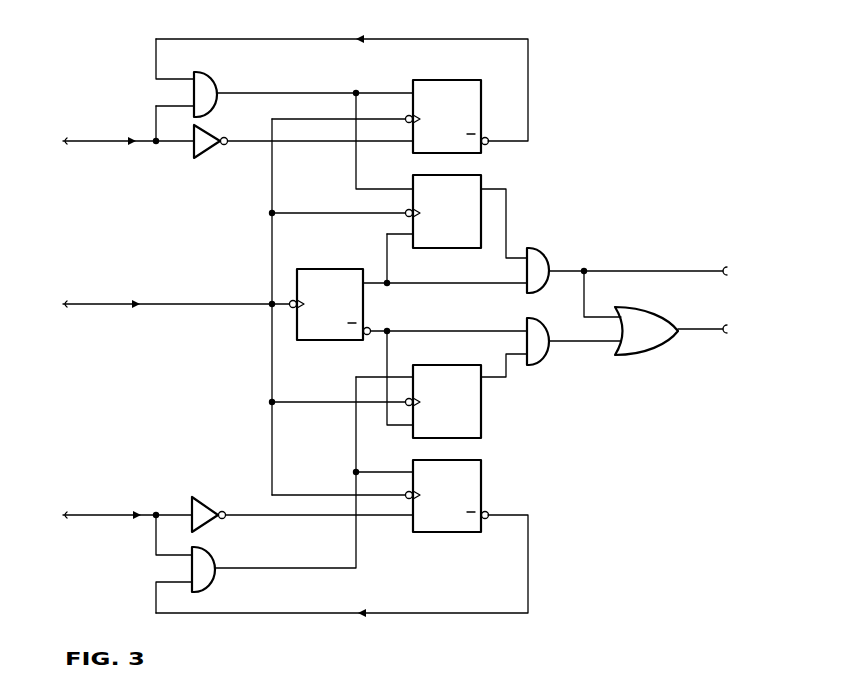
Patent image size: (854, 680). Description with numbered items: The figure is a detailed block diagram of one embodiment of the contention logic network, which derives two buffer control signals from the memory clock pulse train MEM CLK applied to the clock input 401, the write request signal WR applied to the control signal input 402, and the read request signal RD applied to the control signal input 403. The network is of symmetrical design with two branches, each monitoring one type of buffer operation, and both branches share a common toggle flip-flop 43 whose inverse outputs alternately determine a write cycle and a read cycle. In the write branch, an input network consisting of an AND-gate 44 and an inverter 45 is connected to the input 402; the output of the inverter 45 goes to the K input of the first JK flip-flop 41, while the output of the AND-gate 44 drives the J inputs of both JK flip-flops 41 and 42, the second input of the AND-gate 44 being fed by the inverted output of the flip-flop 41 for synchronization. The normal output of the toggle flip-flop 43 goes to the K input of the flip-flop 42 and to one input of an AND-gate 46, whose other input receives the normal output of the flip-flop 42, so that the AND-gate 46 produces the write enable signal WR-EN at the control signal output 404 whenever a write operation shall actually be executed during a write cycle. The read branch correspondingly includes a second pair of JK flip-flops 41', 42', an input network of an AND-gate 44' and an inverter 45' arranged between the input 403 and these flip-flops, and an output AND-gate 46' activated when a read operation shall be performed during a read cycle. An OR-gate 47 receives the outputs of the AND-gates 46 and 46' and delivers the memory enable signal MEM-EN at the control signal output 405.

The first JK flip-flop 41 is at (342, 94).
The second JK flip-flop 42 is at (441, 188).
The toggle flip-flop 43 is at (309, 341).
The AND-gate 44 is at (284, 90).
The inverter 45 is at (303, 157).
The AND-gate 46 is at (555, 259).
The OR-gate 47 is at (655, 318).
The JK flip-flop 41' is at (342, 538).
The JK flip-flop 42' is at (441, 384).
The AND-gate 44' is at (256, 495).
The inverter 45' is at (302, 499).
The AND-gate 46' is at (573, 353).
The clock input 401 is at (67, 307).
The control signal input 402 is at (68, 147).
The control signal input 403 is at (68, 518).
The control signal output 404 is at (697, 270).
The control signal output 405 is at (697, 332).